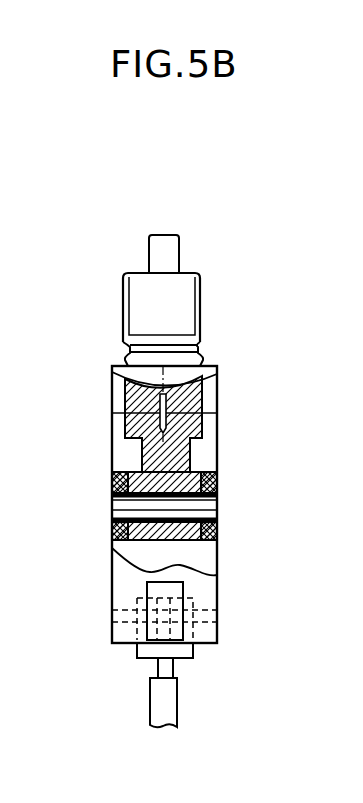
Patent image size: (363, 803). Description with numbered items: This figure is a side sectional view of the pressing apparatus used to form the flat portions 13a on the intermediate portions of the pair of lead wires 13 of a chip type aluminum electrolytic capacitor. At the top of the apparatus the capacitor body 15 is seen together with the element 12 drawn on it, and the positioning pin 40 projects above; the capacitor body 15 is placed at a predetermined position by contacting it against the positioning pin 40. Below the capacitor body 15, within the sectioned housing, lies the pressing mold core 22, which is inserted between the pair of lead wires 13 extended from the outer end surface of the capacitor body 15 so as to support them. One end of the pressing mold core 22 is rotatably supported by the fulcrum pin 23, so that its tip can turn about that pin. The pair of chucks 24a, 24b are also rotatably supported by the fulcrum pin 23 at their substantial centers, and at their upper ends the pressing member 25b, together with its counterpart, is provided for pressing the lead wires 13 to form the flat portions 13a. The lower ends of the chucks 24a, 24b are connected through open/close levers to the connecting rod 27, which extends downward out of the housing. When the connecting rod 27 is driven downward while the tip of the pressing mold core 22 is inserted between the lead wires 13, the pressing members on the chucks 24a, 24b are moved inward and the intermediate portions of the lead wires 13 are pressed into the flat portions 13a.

The positioning pin 40 is at (170, 250).
The plug body 12 is at (192, 287).
The capacitor body 15 is at (125, 272).
The flat portion 13a is at (180, 372).
The pressing mold core 22 is at (132, 393).
The pressing member 25b is at (210, 398).
The lead wire 13 is at (128, 431).
The chuck 24a is at (208, 482).
The chuck 24b is at (205, 503).
The fulcrum pin 23 is at (205, 513).
The connecting rod 27 is at (167, 703).